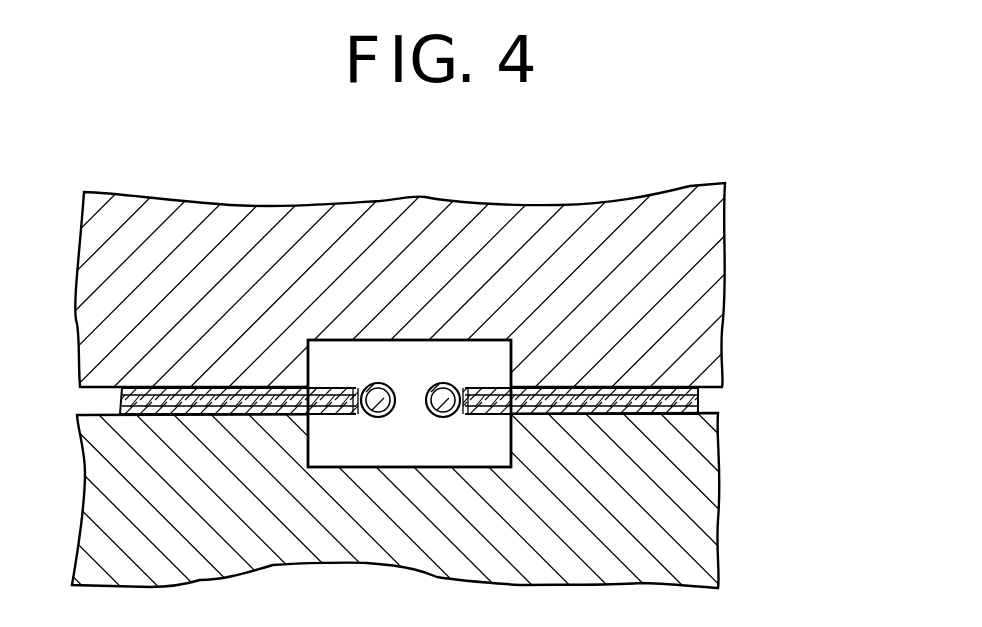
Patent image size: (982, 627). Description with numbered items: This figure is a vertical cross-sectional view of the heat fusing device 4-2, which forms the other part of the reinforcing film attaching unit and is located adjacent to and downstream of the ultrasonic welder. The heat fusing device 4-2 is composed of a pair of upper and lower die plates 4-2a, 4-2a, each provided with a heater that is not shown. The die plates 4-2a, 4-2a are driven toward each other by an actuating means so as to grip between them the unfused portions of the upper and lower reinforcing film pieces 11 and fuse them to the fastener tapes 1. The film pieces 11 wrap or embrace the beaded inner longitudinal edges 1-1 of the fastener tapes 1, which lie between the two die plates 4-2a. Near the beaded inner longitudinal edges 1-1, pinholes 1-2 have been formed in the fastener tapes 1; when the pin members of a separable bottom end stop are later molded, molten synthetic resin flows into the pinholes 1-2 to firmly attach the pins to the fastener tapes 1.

The heat fusing device 4-2 is at (482, 313).
The die plate 4-2a is at (725, 250).
The fastener tape 1 is at (407, 392).
The reinforcing film piece 11 is at (150, 388).
The beaded inner longitudinal edge 1-1 is at (438, 383).
The pinhole 1-2 is at (468, 417).